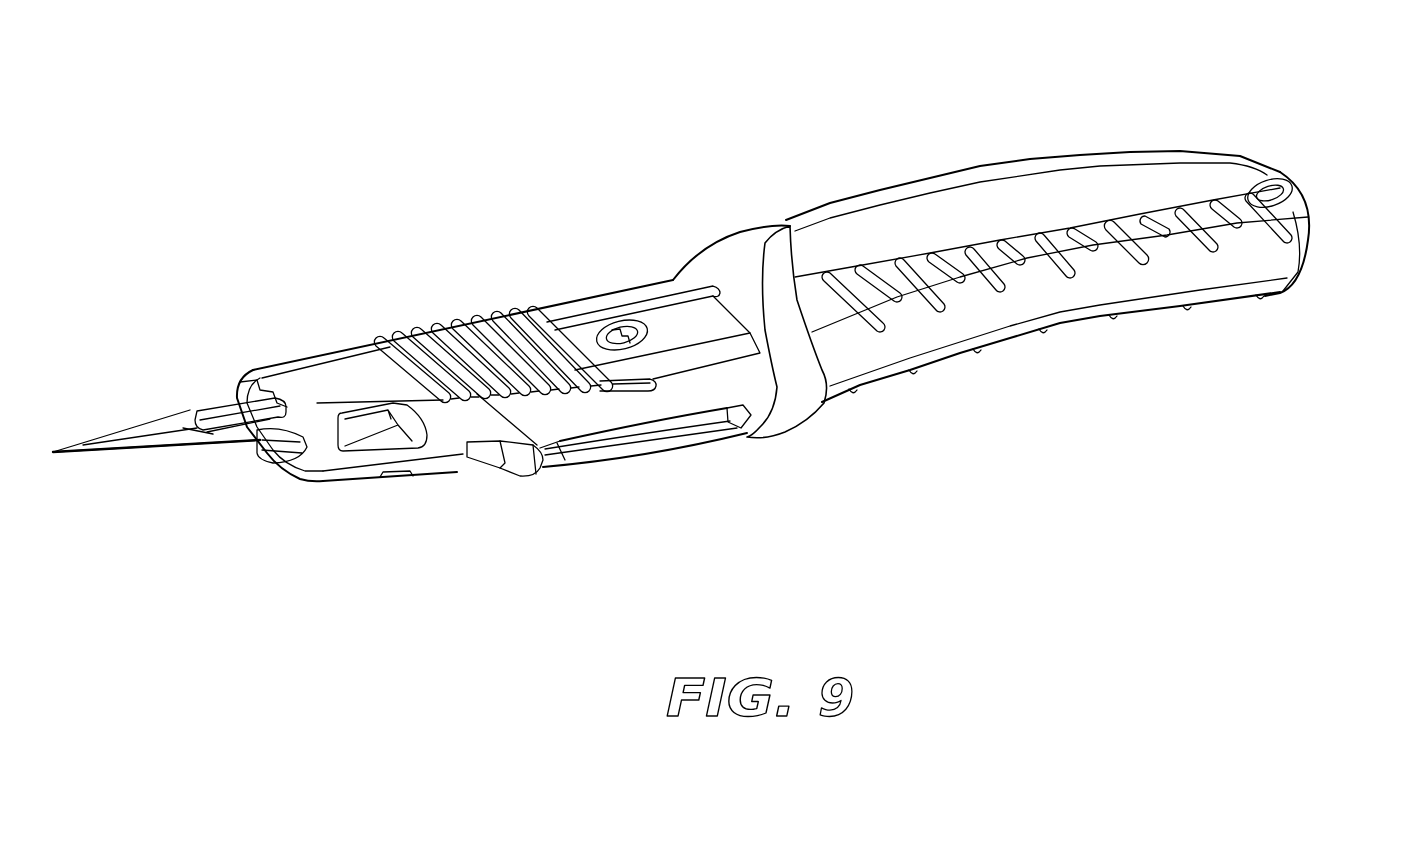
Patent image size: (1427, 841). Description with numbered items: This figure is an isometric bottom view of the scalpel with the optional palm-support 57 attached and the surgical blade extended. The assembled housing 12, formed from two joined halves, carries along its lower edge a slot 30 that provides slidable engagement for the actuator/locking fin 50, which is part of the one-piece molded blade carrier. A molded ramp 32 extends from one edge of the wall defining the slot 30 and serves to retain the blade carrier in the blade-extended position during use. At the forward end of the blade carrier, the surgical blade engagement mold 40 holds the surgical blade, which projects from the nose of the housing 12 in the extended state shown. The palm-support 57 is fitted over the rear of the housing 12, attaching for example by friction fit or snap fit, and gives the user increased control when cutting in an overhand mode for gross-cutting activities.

The housing 12 is at (1306, 166).
The palm-support 57 is at (987, 167).
The surgical blade engagement mold 40 is at (213, 410).
The actuator/locking fin 50 is at (528, 457).
The molded ramp 32 is at (562, 456).
The slot 30 is at (713, 424).